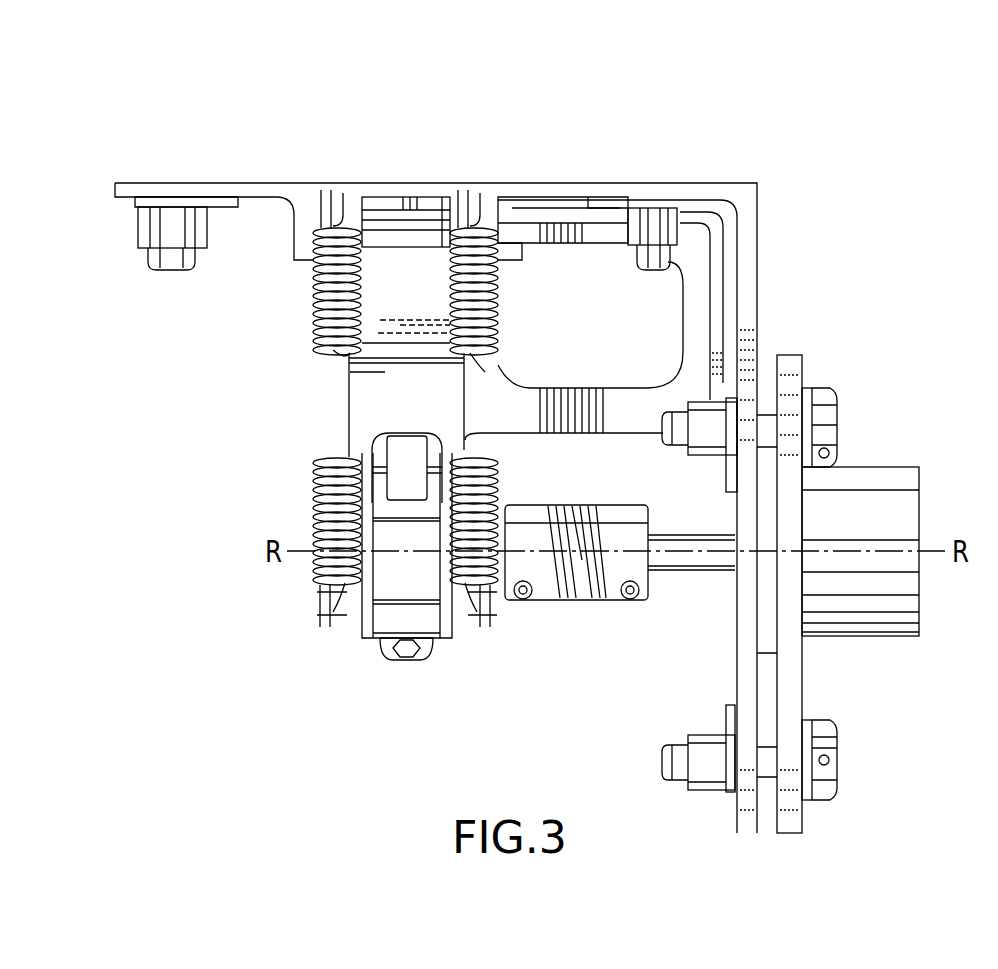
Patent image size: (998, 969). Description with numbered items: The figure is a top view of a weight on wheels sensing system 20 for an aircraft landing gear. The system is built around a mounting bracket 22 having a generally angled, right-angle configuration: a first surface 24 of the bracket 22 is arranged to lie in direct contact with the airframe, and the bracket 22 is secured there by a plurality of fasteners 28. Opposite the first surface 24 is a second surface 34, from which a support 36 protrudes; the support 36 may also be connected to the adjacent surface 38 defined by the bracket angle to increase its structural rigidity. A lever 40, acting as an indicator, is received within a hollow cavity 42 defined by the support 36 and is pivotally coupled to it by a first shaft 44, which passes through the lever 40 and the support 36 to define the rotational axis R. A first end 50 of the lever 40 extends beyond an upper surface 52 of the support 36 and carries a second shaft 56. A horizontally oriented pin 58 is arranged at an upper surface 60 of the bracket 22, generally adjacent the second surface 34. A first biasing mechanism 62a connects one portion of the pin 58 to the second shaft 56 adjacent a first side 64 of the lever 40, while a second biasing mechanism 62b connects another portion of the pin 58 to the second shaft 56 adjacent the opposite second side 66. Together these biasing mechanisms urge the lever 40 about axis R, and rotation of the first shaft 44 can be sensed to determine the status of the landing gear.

The weight on wheels sensing system 20 is at (888, 140).
The mounting bracket 22 is at (759, 217).
The first surface 24 is at (541, 185).
The fasteners 28 is at (172, 230).
The second surface 34 is at (260, 200).
The support 36 is at (407, 330).
The adjacent surface 38 is at (735, 638).
The lever 40 is at (371, 640).
The hollow cavity 42 is at (378, 452).
The first shaft 44 is at (697, 550).
The first end 50 is at (415, 578).
The upper surface 52 is at (473, 437).
The second shaft 56 is at (317, 602).
The pin 58 is at (463, 203).
The upper surface 60 is at (417, 196).
The first biasing mechanism 62a is at (313, 518).
The second biasing mechanism 62b is at (500, 487).
The first side 64 is at (355, 623).
The second side 66 is at (455, 627).